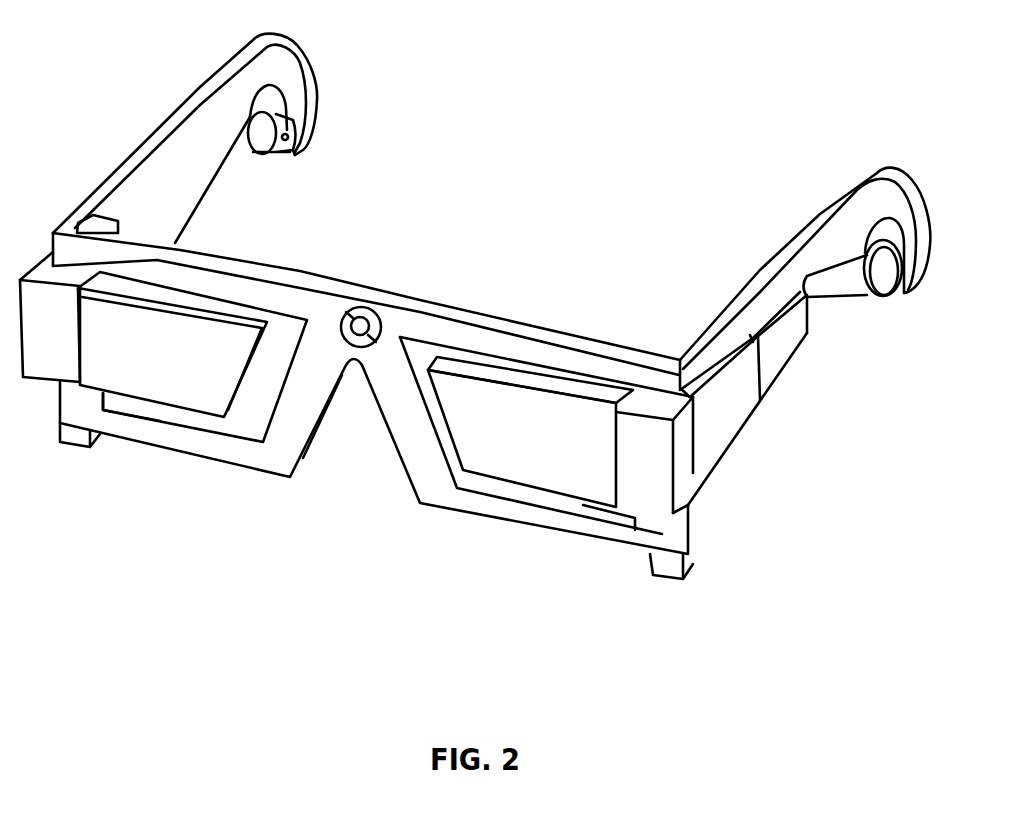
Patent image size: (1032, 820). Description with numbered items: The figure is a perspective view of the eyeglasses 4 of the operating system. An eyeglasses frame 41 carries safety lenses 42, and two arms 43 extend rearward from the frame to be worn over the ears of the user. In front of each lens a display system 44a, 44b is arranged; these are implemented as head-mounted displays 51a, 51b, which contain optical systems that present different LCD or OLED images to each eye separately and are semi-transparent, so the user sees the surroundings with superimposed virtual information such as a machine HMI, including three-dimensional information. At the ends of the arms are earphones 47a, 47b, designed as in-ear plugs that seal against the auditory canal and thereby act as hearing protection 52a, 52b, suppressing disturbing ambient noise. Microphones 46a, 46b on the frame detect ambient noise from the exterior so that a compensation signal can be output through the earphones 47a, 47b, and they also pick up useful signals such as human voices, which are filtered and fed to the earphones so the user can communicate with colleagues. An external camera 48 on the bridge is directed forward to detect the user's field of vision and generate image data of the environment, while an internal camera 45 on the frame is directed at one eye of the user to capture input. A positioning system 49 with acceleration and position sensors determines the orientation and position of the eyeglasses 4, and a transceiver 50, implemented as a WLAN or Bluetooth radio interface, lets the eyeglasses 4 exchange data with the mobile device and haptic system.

The eyeglasses 4 is at (222, 588).
The eyeglasses frame 41 is at (537, 517).
The safety lenses 42 is at (245, 430).
The arms 43 is at (240, 87).
The display system 44a is at (122, 412).
The display system 44b is at (591, 515).
The internal camera 45 is at (98, 220).
The microphone 46a is at (68, 443).
The microphone 46b is at (673, 577).
The earphone 47a is at (265, 141).
The earphone 47b is at (885, 280).
The external camera 48 is at (371, 316).
The positioning system 49 is at (783, 336).
The transceiver 50 is at (725, 417).
The head-mounted display 51a is at (177, 388).
The head-mounted display 51b is at (538, 410).
The hearing protection 52a is at (295, 166).
The hearing protection 52b is at (900, 303).